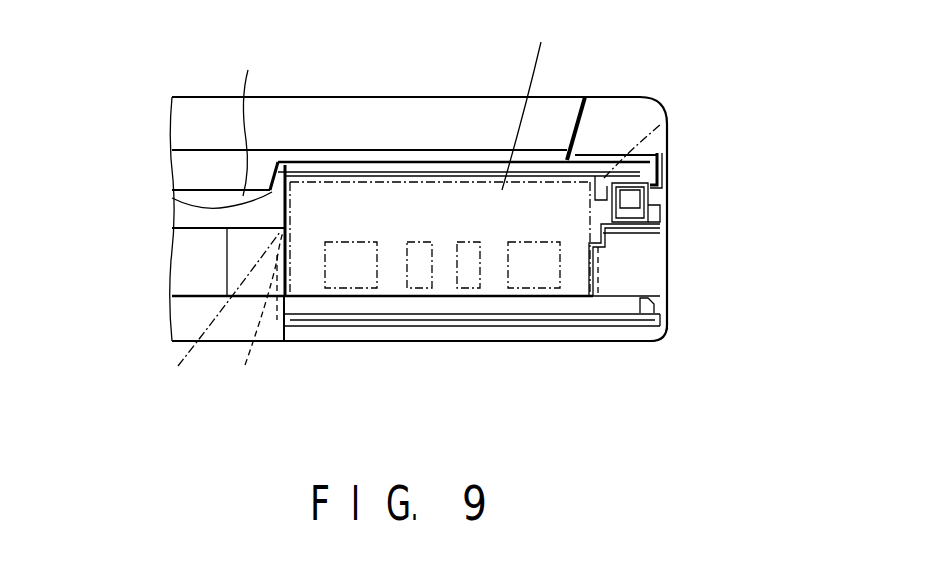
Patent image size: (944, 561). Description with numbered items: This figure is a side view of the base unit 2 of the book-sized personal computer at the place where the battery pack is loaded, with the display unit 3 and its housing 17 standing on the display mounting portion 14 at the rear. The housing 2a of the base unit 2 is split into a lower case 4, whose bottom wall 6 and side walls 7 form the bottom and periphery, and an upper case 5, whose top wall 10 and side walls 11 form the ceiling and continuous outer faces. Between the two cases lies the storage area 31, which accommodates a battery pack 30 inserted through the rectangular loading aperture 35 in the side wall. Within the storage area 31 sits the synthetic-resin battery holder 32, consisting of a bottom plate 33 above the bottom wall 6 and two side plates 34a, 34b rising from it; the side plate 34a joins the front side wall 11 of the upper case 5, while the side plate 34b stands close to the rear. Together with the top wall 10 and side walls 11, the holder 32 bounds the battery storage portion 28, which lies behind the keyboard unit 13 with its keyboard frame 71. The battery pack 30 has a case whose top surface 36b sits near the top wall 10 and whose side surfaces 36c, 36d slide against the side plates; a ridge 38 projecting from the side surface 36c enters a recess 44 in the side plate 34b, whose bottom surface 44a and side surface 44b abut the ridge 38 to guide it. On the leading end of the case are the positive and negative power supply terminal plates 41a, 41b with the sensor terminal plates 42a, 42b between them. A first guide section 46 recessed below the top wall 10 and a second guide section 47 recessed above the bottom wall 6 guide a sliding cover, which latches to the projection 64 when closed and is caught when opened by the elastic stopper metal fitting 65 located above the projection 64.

The base unit 2 is at (676, 194).
The housing 2a is at (182, 318).
The display unit 3 is at (491, 96).
The lower case 4 is at (665, 335).
The upper case 5 is at (545, 167).
The bottom wall 6 is at (325, 323).
The side walls 7 is at (667, 263).
The top wall 10 is at (118, 228).
The side walls 11 is at (176, 197).
The keyboard unit 13 is at (190, 218).
The display mounting portion 14 is at (645, 112).
The housing 17 is at (184, 120).
The battery storage portion 28 is at (533, 102).
The battery pack 30 is at (365, 176).
The storage area 31 is at (438, 239).
The battery holder 32 is at (438, 303).
The bottom plate 33 is at (560, 298).
The side plate 34a is at (254, 316).
The side plate 34b is at (603, 273).
The loading aperture 35 is at (497, 285).
The top surface 36b is at (405, 180).
The side surface 36c is at (604, 178).
The side surface 36d is at (206, 316).
The ridge 38 is at (664, 127).
The positive power supply terminal plate 41a is at (350, 256).
The negative power supply terminal plate 41b is at (535, 262).
The terminal plate 42a is at (407, 265).
The terminal plate 42b is at (470, 280).
The recess 44 is at (662, 158).
The bottom surface 44a is at (603, 233).
The side surface 44b is at (668, 212).
The first guide section 46 is at (318, 170).
The second guide section 47 is at (625, 322).
The projection 64 is at (657, 307).
The stopper metal fitting 65 is at (668, 198).
The keyboard frame 71 is at (248, 118).